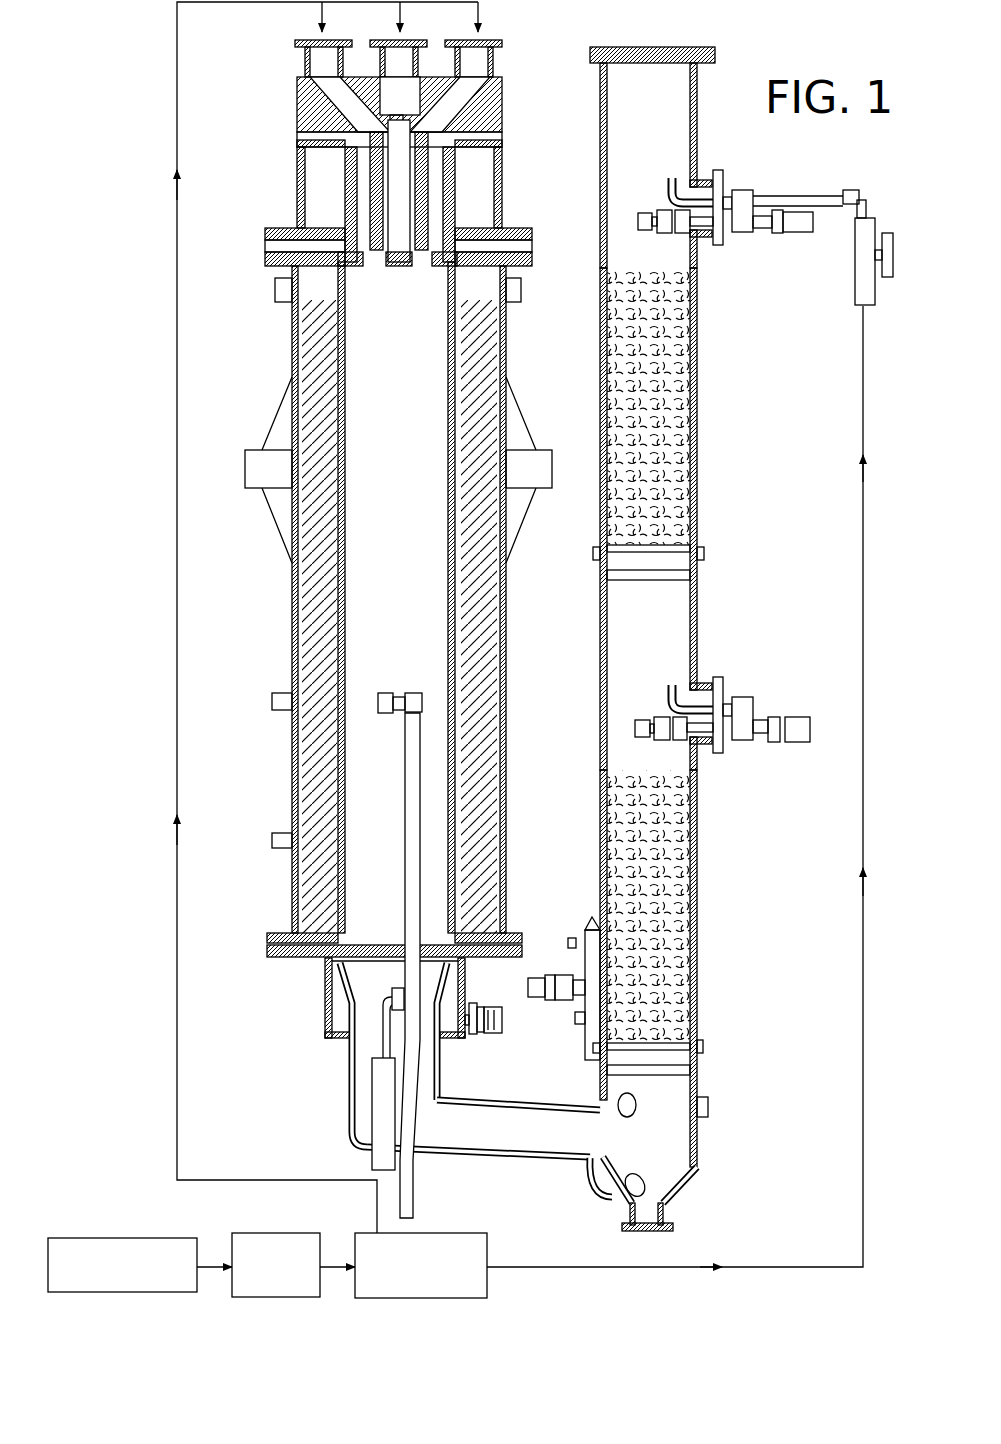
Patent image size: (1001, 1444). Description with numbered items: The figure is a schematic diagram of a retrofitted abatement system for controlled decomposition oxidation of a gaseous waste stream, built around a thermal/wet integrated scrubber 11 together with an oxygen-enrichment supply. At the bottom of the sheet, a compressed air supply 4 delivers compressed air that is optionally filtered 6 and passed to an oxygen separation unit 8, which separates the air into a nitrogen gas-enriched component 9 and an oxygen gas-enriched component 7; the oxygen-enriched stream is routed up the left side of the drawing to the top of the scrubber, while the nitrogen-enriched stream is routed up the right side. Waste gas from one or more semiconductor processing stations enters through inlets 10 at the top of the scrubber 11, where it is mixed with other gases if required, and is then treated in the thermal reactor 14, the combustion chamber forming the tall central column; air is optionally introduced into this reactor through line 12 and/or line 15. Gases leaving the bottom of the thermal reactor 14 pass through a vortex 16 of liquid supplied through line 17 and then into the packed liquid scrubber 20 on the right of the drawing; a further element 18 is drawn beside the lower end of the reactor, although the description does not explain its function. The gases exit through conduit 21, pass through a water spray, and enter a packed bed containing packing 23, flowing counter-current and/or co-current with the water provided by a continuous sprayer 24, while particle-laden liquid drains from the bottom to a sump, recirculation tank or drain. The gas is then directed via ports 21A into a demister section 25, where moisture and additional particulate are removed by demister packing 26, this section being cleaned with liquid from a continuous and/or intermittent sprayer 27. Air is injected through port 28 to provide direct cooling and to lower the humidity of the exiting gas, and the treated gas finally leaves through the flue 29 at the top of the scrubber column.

The compressed air supply 4 is at (127, 1237).
The filter 6 is at (297, 1233).
The oxygen gas-enriched component 7 is at (177, 706).
The oxygen separation unit 8 is at (446, 1233).
The nitrogen gas-enriched component 9 is at (690, 1264).
The inlets 10 is at (286, 48).
The thermal/wet integrated scrubber 11 is at (283, 172).
The line 12 is at (265, 250).
The thermal reactor 14 is at (410, 432).
The line 15 is at (413, 1206).
The vortex 16 is at (352, 980).
The line 17 is at (488, 1036).
The sensor 18 is at (398, 1012).
The packed liquid scrubber 20 is at (702, 961).
The conduit 21 is at (483, 1138).
The ports 21A is at (797, 717).
The packing 23 is at (695, 881).
The continuous sprayer 24 is at (640, 718).
The demister section 25 is at (702, 358).
The demister packing 26 is at (690, 323).
The sprayer 27 is at (640, 234).
The port 28 is at (672, 177).
The flue 29 is at (660, 135).